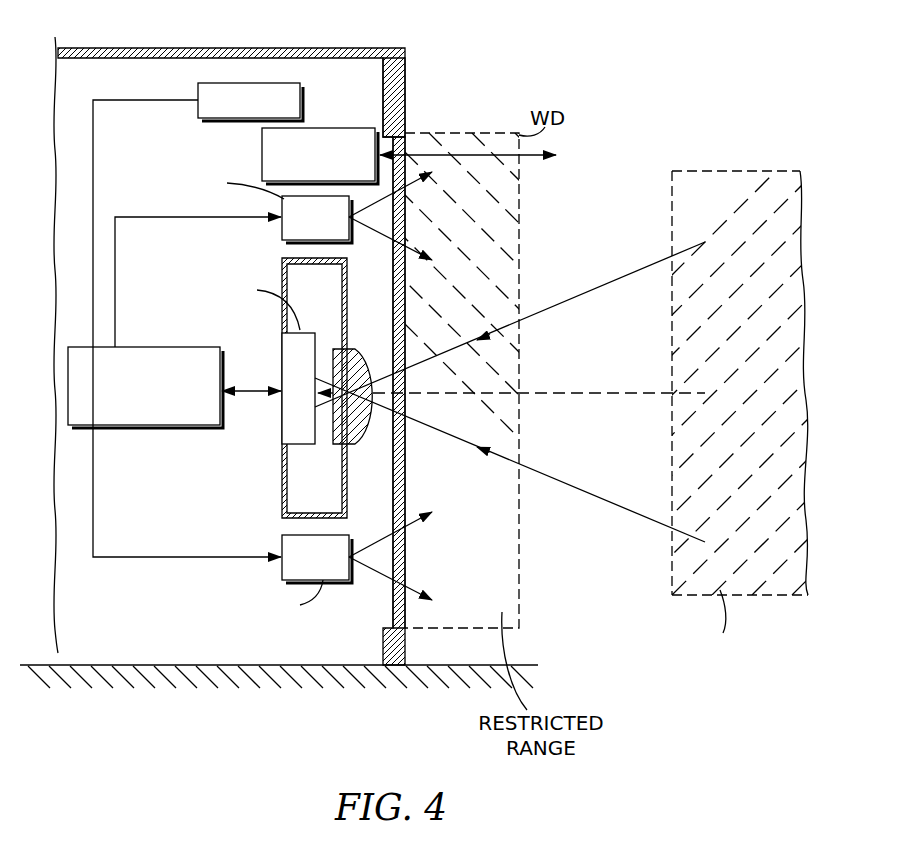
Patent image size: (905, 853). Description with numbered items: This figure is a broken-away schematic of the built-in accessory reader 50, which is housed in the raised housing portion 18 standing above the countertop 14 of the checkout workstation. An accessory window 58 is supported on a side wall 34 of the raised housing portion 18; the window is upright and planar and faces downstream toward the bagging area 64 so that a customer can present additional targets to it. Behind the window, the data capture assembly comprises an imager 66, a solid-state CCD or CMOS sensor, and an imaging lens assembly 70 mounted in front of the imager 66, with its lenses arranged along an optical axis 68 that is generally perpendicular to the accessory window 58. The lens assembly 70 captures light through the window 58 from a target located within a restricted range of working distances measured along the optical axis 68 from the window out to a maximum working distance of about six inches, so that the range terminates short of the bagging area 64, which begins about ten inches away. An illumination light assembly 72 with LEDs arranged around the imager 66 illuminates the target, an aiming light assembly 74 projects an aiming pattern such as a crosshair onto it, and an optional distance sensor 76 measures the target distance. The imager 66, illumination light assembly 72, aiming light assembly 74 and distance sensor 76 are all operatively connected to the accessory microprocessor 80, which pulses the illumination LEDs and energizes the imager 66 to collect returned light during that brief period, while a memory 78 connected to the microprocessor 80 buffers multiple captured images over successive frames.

The countertop 14 is at (42, 665).
The raised housing portion 18 is at (360, 48).
The side wall 34 is at (406, 84).
The accessory reader 50 is at (126, 78).
The accessory window 58 is at (393, 463).
The bagging area 64 is at (628, 439).
The imager 66 is at (282, 420).
The optical axis 68 is at (586, 391).
The imaging lens assembly 70 is at (360, 352).
The illumination light assembly 72 is at (283, 228).
The aiming light assembly 74 is at (282, 546).
The distance sensor 76 is at (355, 128).
The memory 78 is at (290, 83).
The accessory microprocessor 80 is at (183, 426).